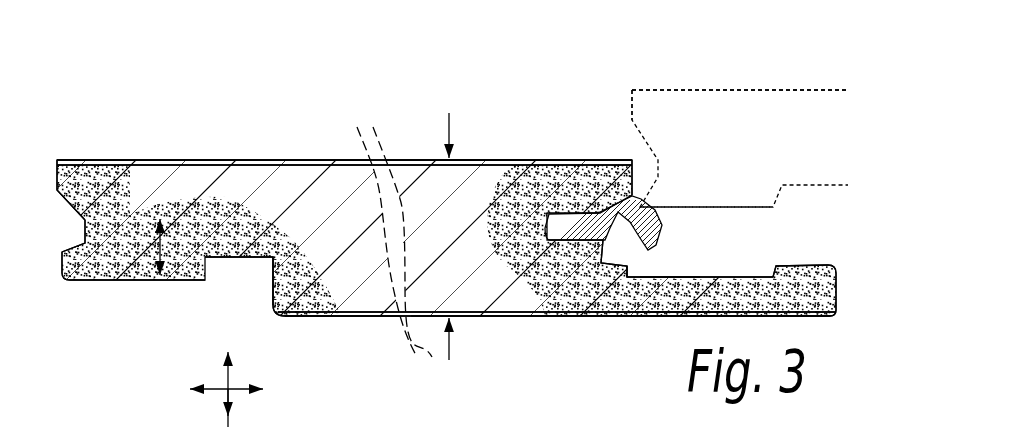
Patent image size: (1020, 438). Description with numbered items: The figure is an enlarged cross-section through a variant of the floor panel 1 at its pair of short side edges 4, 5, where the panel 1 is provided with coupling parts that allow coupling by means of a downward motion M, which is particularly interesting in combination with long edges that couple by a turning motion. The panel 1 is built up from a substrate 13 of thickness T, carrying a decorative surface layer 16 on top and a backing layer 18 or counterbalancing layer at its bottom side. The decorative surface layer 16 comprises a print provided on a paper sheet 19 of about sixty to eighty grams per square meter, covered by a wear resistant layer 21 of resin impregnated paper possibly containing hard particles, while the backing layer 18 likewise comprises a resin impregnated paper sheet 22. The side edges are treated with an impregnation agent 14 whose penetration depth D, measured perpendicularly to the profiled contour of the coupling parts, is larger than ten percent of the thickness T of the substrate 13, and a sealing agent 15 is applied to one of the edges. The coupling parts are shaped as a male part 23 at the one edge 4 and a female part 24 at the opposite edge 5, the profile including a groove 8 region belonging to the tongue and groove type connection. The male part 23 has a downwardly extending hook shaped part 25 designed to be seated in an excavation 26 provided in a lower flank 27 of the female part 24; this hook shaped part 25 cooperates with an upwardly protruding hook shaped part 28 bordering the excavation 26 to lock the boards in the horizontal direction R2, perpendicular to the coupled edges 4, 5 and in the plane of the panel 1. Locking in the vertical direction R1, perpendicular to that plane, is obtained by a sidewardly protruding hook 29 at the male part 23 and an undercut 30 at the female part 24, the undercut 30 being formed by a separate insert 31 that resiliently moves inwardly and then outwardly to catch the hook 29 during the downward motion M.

The panel 1 is at (234, 140).
The short side edge 4 is at (110, 323).
The short side edge 5 is at (767, 252).
The groove 8 is at (140, 262).
The substrate 13 is at (347, 317).
The impregnation agent 14 is at (272, 275).
The sealing agent 15 is at (655, 207).
The decorative surface layer 16 is at (637, 162).
The backing layer 18 is at (668, 315).
The paper sheet 19 is at (283, 162).
The wear resistant layer 21 is at (498, 160).
The paper sheet 22 is at (323, 316).
The male part 23 is at (120, 255).
The female part 24 is at (725, 295).
The hook shaped part 25 is at (98, 270).
The excavation 26 is at (703, 273).
The lower flank 27 is at (673, 293).
The hook shaped part 28 is at (802, 310).
The hook 29 is at (78, 255).
The undercut 30 is at (648, 265).
The insert 31 is at (632, 90).
The penetration depth D is at (176, 283).
The thickness T is at (452, 355).
The downward motion M is at (710, 182).
The vertical direction R1 is at (227, 378).
The horizontal direction R2 is at (233, 394).